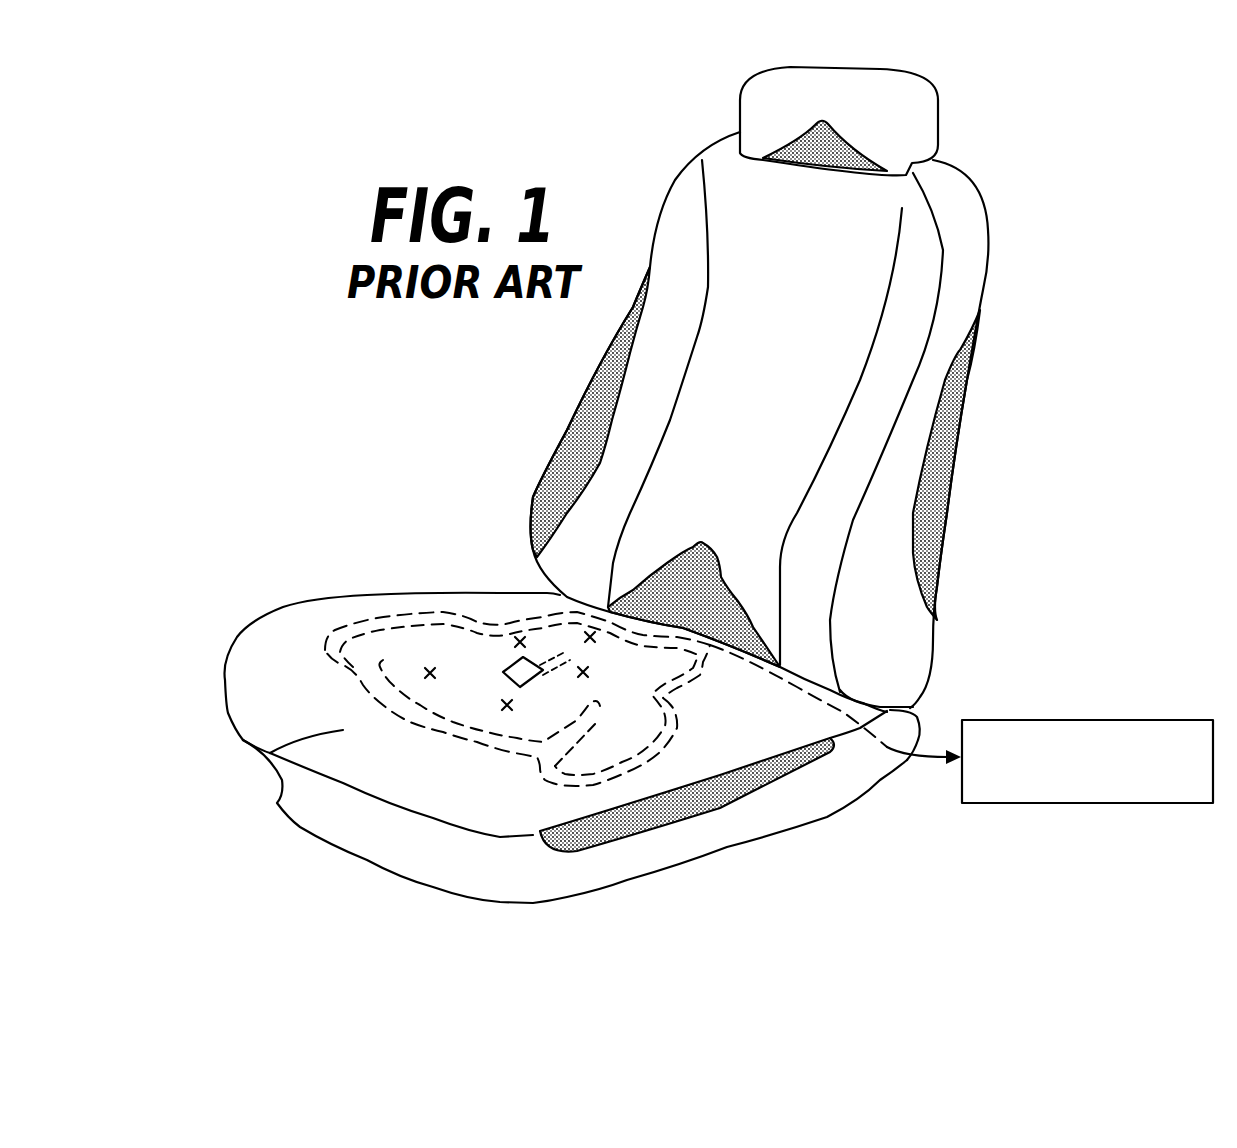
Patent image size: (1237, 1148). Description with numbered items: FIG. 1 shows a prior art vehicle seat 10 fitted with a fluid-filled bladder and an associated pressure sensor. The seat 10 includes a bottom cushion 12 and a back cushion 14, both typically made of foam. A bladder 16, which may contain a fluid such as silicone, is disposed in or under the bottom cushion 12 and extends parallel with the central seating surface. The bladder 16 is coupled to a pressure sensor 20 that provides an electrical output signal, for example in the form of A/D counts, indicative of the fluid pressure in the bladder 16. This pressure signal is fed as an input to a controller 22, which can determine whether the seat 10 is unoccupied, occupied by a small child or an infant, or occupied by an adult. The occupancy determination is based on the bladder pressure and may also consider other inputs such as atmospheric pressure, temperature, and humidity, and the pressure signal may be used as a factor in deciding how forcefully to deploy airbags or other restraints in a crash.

The vehicle seat 10 is at (1037, 234).
The bottom cushion 12 is at (277, 805).
The back cushion 14 is at (957, 323).
The bladder 16 is at (407, 723).
The pressure sensor 20 is at (507, 678).
The controller 22 is at (1098, 803).